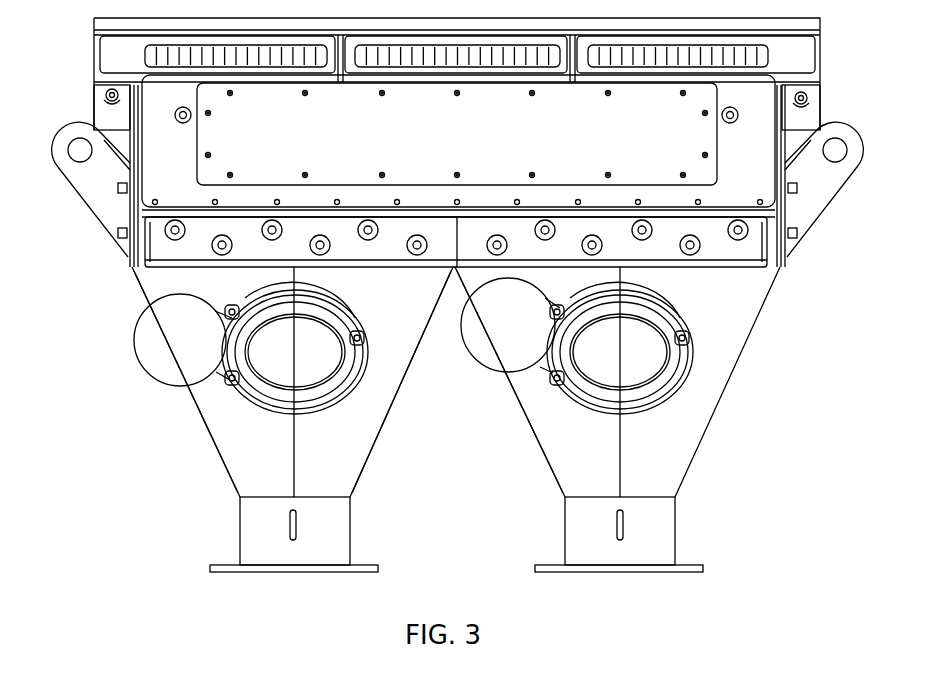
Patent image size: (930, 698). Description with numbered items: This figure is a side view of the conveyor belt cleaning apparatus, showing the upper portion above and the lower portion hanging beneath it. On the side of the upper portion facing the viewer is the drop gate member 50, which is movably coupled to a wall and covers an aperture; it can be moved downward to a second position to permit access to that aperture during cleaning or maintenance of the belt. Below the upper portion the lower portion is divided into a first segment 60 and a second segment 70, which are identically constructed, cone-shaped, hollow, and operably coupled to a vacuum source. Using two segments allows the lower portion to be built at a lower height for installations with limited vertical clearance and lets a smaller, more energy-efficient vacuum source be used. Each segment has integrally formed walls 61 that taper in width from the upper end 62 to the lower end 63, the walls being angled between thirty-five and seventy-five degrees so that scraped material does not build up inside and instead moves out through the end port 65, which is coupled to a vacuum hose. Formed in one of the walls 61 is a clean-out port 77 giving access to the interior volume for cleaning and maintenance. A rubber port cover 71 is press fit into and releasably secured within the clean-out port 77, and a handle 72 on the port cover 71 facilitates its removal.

The drop gate member 50 is at (690, 140).
The first segment 60 is at (232, 429).
The walls 61 is at (208, 405).
The upper end 62 is at (112, 295).
The lower end 63 is at (382, 560).
The end port 65 is at (263, 595).
The second segment 70 is at (706, 410).
The port cover 71 is at (315, 373).
The handle 72 is at (135, 347).
The clean-out port 77 is at (307, 412).